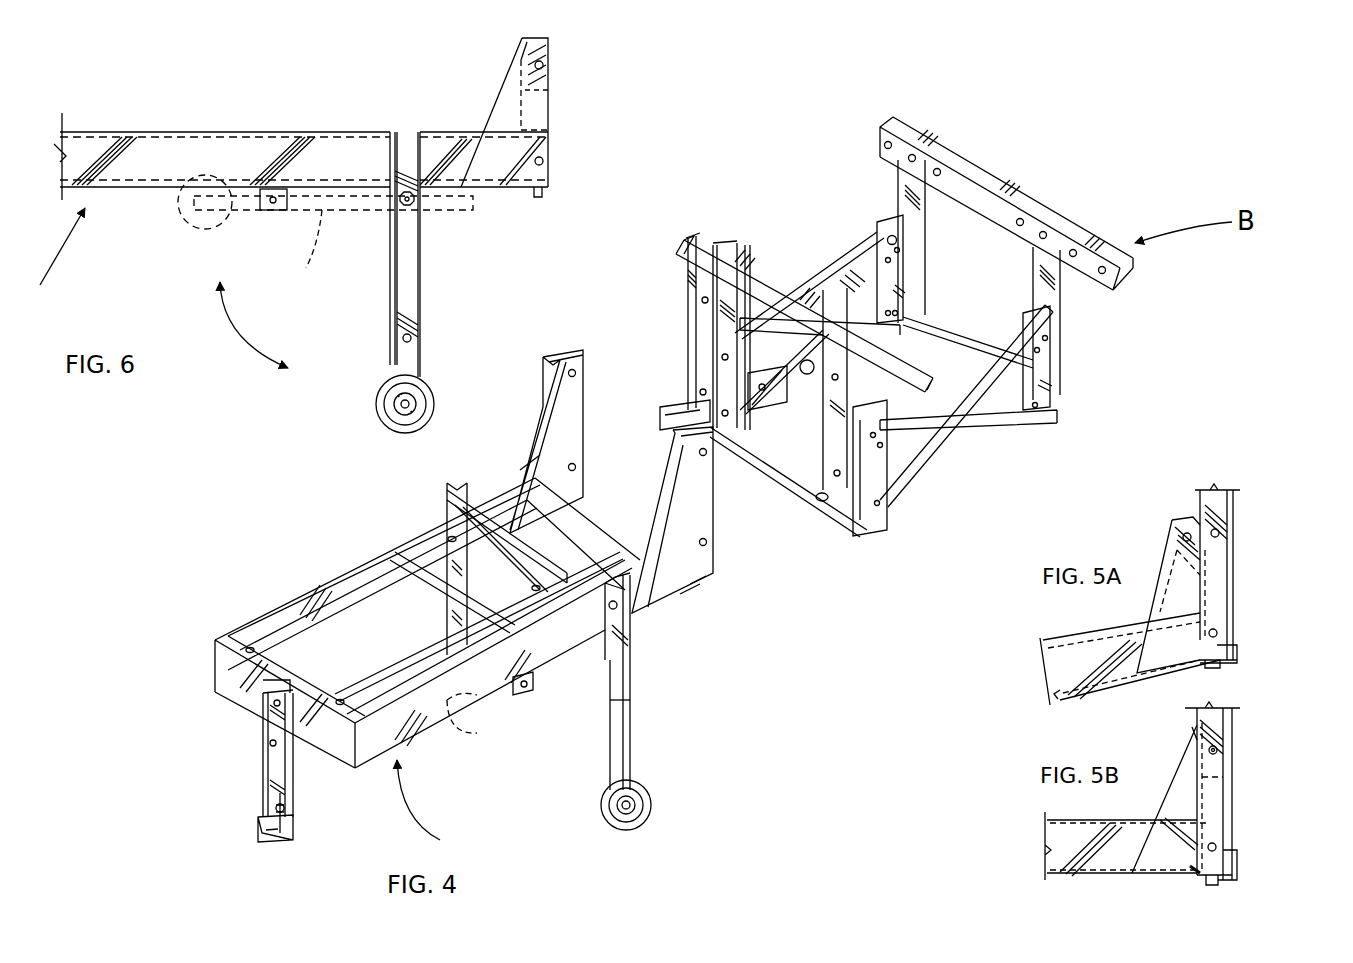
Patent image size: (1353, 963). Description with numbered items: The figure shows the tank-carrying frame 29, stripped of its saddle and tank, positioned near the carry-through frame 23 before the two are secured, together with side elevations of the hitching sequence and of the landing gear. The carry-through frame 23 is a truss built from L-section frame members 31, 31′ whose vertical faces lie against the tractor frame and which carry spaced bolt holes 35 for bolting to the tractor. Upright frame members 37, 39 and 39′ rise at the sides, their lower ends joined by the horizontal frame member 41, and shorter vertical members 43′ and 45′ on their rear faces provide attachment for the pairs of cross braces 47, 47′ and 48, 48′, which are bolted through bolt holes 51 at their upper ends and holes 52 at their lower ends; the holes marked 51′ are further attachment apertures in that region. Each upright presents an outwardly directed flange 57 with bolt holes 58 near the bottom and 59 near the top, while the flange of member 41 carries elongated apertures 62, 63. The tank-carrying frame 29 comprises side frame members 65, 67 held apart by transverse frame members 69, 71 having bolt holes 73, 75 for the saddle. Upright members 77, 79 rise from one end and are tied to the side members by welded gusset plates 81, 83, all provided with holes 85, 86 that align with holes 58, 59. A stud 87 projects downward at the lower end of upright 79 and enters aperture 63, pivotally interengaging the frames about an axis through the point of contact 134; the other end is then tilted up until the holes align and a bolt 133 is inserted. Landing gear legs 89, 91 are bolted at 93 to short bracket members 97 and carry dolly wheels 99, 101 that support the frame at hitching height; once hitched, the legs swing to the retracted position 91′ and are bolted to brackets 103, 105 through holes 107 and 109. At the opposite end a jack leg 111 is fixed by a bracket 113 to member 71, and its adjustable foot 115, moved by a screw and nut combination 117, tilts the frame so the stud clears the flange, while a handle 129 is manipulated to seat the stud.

In FIG. 4, the carry-through frame 23 is at (1045, 178).
In FIG. 6, the tank-carrying frame 29 is at (51, 250).
In FIG. 4, the tank-carrying frame 29 is at (435, 808).
In FIG. 4, the L-section frame member 31 is at (718, 243).
In FIG. 4, the L-section frame member 31′ is at (1030, 157).
In FIG. 4, the bolt holes 35 is at (1106, 269).
In FIG. 4, the upright frame member 37 is at (688, 252).
In FIG. 5A, the upright frame member 39 is at (1222, 505).
In FIG. 5B, the upright frame member 39 is at (1235, 722).
In FIG. 4, the upright frame member 39′ is at (1062, 272).
In FIG. 4, the horizontal frame member 41 is at (683, 373).
In FIG. 5A, the horizontal frame member 41 is at (1237, 647).
In FIG. 4, the shorter vertical member 43′ is at (897, 240).
In FIG. 4, the shorter vertical member 45′ is at (1052, 358).
In FIG. 4, the cross brace 47 is at (763, 320).
In FIG. 4, the cross brace 47′ is at (990, 432).
In FIG. 4, the cross brace 48 is at (880, 232).
In FIG. 4, the cross brace 48′ is at (1000, 420).
In FIG. 4, the bolt holes 51 is at (892, 261).
In FIG. 4, the bolt hole 51′ is at (1040, 350).
In FIG. 4, the holes 52 is at (897, 312).
In FIG. 4, the outwardly directed flange 57 is at (865, 492).
In FIG. 4, the bolt holes 58 is at (700, 392).
In FIG. 5A, the bolt holes 58 is at (1217, 632).
In FIG. 4, the bolt holes 59 is at (703, 298).
In FIG. 5A, the bolt holes 59 is at (1219, 533).
In FIG. 4, the elongated aperture 62 is at (680, 408).
In FIG. 4, the elongated aperture 63 is at (822, 503).
In FIG. 5A, the elongated aperture 63 is at (1210, 665).
In FIG. 5B, the elongated aperture 63 is at (1225, 883).
In FIG. 4, the side frame member 65 is at (327, 573).
In FIG. 6, the side frame member 67 is at (125, 195).
In FIG. 4, the side frame member 67 is at (395, 758).
In FIG. 5A, the side frame member 67 is at (1112, 628).
In FIG. 5B, the side frame member 67 is at (1060, 820).
In FIG. 4, the transverse frame member 69 is at (400, 560).
In FIG. 4, the transverse frame member 71 is at (240, 690).
In FIG. 4, the bolt holes 73 is at (457, 540).
In FIG. 4, the bolt holes 75 is at (247, 650).
In FIG. 4, the upright member 77 is at (543, 380).
In FIG. 6, the upright member 79 is at (548, 90).
In FIG. 4, the upright member 79 is at (690, 455).
In FIG. 5A, the upright member 79 is at (1210, 575).
In FIG. 5B, the upright member 79 is at (1223, 777).
In FIG. 4, the gusset plate 81 is at (533, 437).
In FIG. 6, the gusset plate 83 is at (548, 120).
In FIG. 4, the gusset plate 83 is at (690, 515).
In FIG. 5A, the gusset plate 83 is at (1190, 568).
In FIG. 5B, the gusset plate 83 is at (1185, 800).
In FIG. 6, the holes 85 is at (543, 162).
In FIG. 4, the holes 85 is at (568, 467).
In FIG. 5B, the holes 85 is at (1216, 846).
In FIG. 6, the holes 86 is at (543, 66).
In FIG. 4, the holes 86 is at (570, 373).
In FIG. 5A, the holes 86 is at (1190, 533).
In FIG. 6, the stud 87 is at (542, 194).
In FIG. 5A, the stud 87 is at (1218, 665).
In FIG. 5B, the stud 87 is at (1210, 885).
In FIG. 4, the landing gear leg 89 is at (445, 650).
In FIG. 4, the landing gear leg 91 is at (632, 700).
In FIG. 6, the retracted position of leg 91′ is at (350, 282).
In FIG. 6, the bolt 93 is at (412, 203).
In FIG. 6, the bracket member 97 is at (391, 150).
In FIG. 4, the bracket member 97 is at (447, 500).
In FIG. 4, the dolly wheel 99 is at (462, 738).
In FIG. 4, the dolly wheel 101 is at (646, 812).
In FIG. 4, the bracket 103 is at (400, 598).
In FIG. 6, the bracket 105 is at (270, 210).
In FIG. 4, the bracket 105 is at (515, 692).
In FIG. 6, the bolt hole 107 is at (403, 338).
In FIG. 6, the bolt hole 109 is at (240, 230).
In FIG. 4, the bolt hole 109 is at (530, 686).
In FIG. 4, the jack leg 111 is at (263, 775).
In FIG. 4, the bracket 113 is at (265, 718).
In FIG. 4, the adjustable foot 115 is at (258, 838).
In FIG. 4, the screw and nut combination 117 is at (295, 812).
In FIG. 4, the handle 129 is at (272, 705).
In FIG. 5B, the bolt 133 is at (1217, 750).
In FIG. 5B, the point of contact 134 is at (1197, 873).